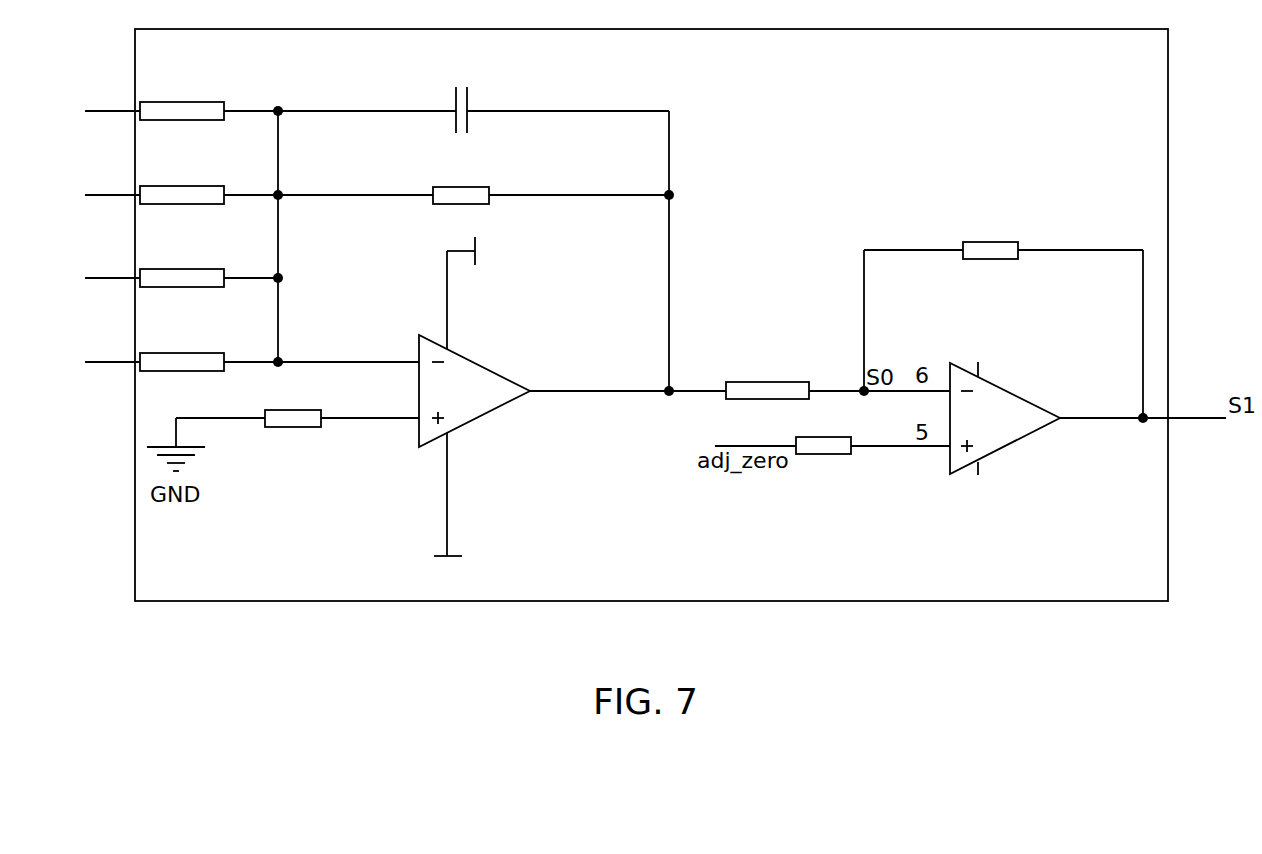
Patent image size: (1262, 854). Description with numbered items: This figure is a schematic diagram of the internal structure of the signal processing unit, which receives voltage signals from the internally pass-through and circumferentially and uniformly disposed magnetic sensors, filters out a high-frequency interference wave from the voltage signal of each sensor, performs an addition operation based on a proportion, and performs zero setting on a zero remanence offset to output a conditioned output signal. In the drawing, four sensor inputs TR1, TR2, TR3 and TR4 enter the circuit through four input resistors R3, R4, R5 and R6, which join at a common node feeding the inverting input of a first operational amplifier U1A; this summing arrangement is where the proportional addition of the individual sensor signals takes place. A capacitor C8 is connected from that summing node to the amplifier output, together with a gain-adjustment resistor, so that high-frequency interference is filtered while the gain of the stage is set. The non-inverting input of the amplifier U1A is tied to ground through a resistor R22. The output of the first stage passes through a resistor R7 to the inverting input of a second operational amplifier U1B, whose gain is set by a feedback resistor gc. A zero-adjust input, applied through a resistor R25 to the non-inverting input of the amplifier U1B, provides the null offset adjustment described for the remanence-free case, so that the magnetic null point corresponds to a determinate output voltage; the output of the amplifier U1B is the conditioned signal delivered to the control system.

The input net TR1 is at (112, 349).
The input net TR2 is at (112, 265).
The input net TR3 is at (112, 181).
The input net TR4 is at (112, 99).
The resistor R3 is at (182, 348).
The resistor R4 is at (182, 263).
The resistor R5 is at (182, 180).
The resistor R6 is at (182, 97).
The resistor R22 is at (293, 403).
The capacitor C8 is at (459, 97).
The operational amplifier U1A (LM358) U1A is at (481, 411).
The resistor R7 (R1002) R7 is at (766, 390).
The resistor R25 (R1002) R25 is at (830, 445).
The feedback resistor gc (R1002) gc is at (997, 251).
The operational amplifier U1B (LM358) U1B is at (1023, 417).